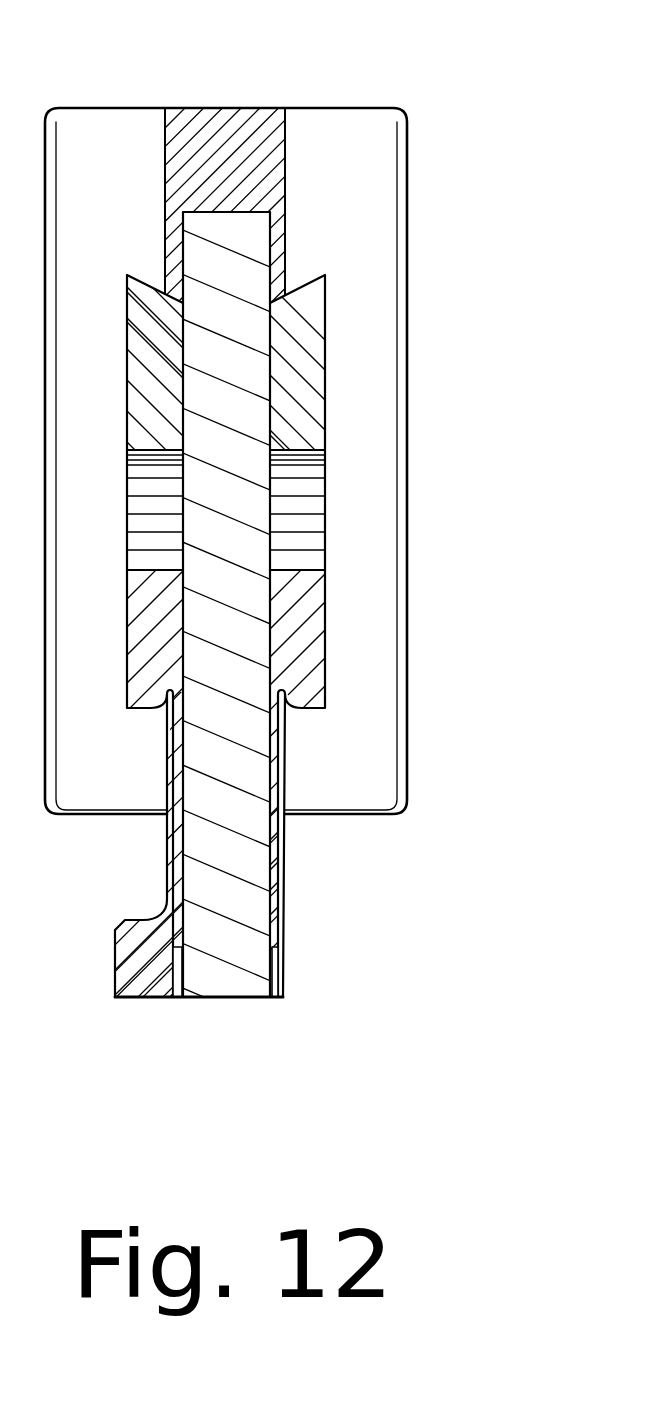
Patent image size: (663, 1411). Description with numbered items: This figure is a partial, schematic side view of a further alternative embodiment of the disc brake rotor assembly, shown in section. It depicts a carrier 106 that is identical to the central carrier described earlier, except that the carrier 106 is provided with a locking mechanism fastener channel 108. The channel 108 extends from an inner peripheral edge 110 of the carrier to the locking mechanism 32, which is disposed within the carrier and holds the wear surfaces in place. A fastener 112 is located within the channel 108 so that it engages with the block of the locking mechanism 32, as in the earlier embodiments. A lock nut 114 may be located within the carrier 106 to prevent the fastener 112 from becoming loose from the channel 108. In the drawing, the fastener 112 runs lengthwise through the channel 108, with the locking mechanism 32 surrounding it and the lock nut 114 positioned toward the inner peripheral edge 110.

The carrier 106 is at (243, 108).
The locking mechanism 32 is at (307, 398).
The locking mechanism fastener channel 108 is at (272, 495).
The fastener 112 is at (235, 545).
The lock nut 114 is at (283, 950).
The inner peripheral edge 110 is at (250, 1024).